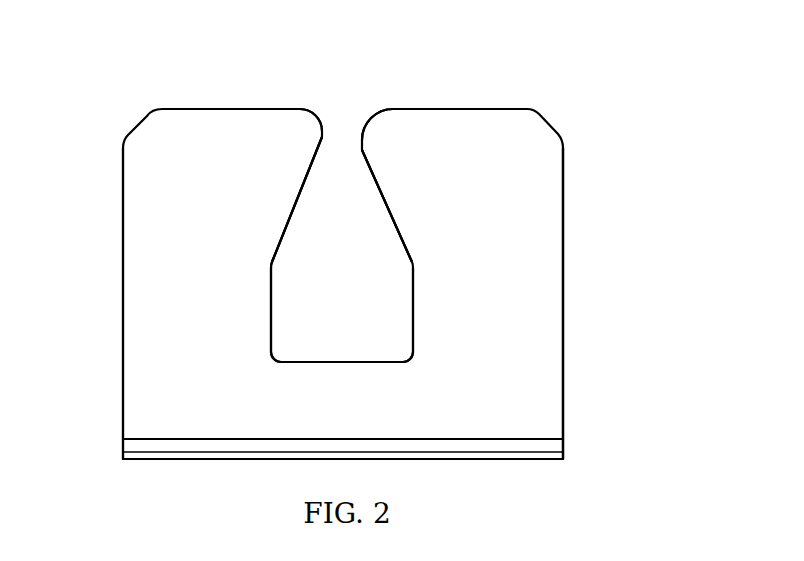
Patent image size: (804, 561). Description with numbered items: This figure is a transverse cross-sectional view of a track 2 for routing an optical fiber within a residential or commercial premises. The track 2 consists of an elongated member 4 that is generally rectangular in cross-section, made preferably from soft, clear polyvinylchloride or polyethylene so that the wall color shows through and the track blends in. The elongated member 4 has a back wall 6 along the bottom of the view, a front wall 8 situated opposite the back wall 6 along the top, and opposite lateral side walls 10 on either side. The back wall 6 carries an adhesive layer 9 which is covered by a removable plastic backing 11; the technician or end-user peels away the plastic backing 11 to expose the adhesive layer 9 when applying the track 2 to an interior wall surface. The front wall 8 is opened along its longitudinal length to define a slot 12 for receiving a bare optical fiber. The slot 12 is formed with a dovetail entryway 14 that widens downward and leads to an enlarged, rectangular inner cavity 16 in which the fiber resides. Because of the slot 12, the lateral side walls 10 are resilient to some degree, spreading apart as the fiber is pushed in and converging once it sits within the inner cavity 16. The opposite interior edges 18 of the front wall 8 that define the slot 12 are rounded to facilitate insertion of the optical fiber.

The track 2 is at (683, 270).
The elongated member 4 is at (563, 316).
The back wall 6 is at (470, 437).
The front wall 8 is at (193, 108).
The adhesive layer 9 is at (563, 445).
The lateral side walls 10 is at (123, 207).
The plastic backing 11 is at (492, 462).
The slot 12 is at (387, 85).
The dovetail entryway 14 is at (342, 153).
The inner cavity 16 is at (356, 326).
The interior edges 18 is at (313, 123).